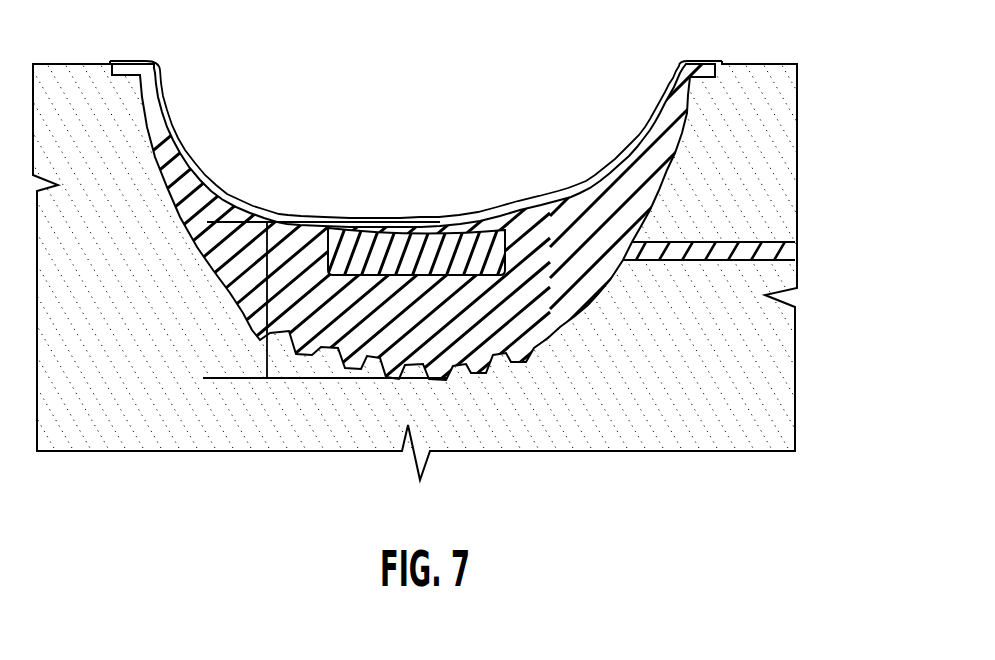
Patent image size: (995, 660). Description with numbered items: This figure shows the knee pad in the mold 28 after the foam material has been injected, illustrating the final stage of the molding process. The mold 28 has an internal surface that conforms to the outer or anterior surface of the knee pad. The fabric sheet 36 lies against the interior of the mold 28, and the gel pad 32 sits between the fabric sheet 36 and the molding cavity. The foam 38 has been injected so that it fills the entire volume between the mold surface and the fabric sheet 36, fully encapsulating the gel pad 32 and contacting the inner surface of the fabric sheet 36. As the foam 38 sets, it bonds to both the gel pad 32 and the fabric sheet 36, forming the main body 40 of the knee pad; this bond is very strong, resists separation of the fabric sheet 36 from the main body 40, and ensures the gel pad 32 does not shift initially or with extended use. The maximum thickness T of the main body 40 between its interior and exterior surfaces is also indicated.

The mold 28 is at (770, 397).
The gel pad 32 is at (397, 262).
The fabric sheet 36 is at (237, 213).
The foam 38 is at (782, 250).
The main body 40 is at (535, 243).
The maximum thickness T is at (260, 348).